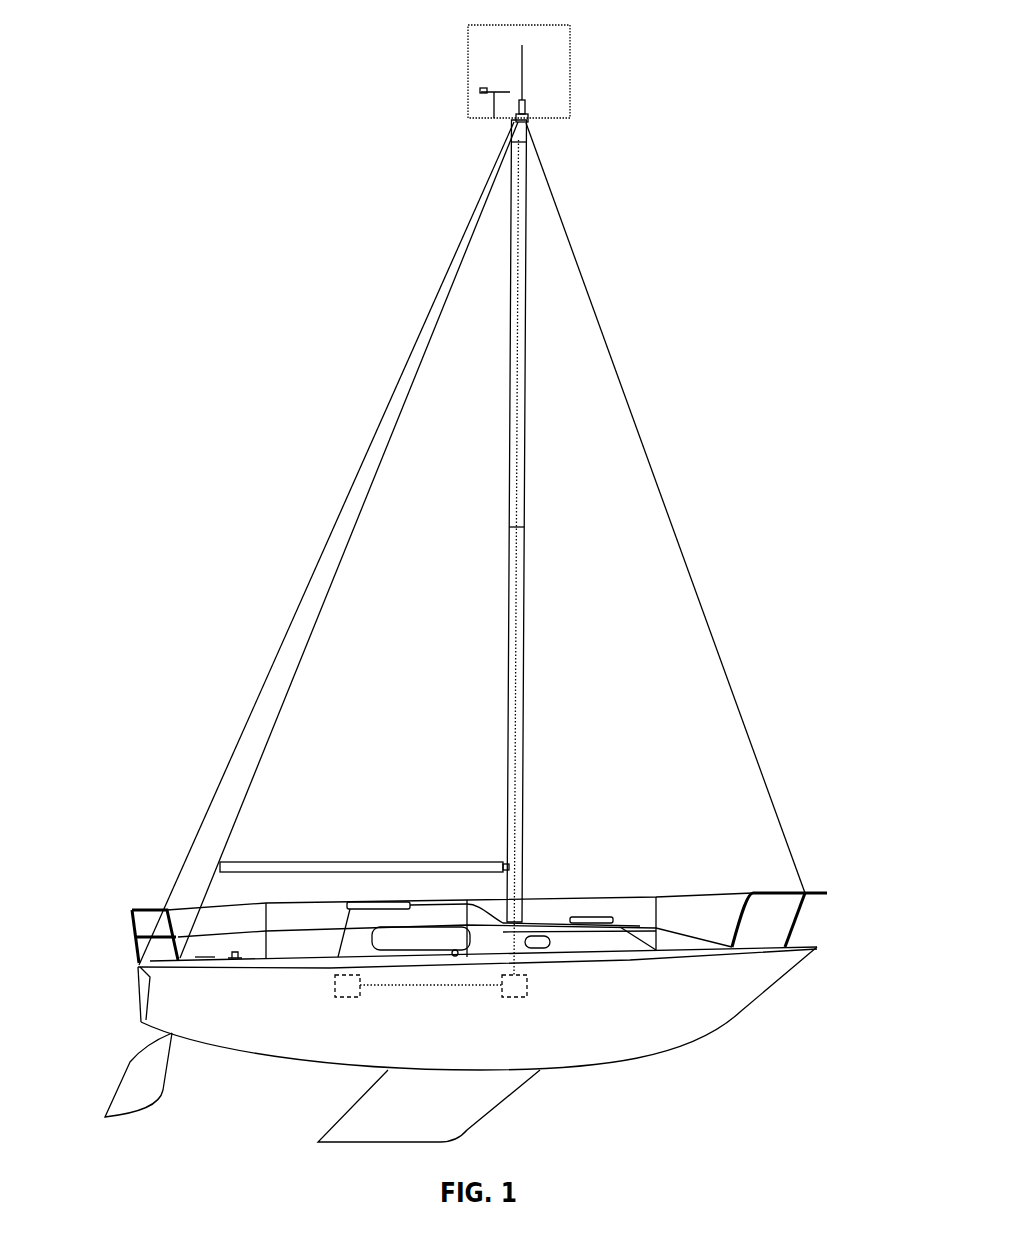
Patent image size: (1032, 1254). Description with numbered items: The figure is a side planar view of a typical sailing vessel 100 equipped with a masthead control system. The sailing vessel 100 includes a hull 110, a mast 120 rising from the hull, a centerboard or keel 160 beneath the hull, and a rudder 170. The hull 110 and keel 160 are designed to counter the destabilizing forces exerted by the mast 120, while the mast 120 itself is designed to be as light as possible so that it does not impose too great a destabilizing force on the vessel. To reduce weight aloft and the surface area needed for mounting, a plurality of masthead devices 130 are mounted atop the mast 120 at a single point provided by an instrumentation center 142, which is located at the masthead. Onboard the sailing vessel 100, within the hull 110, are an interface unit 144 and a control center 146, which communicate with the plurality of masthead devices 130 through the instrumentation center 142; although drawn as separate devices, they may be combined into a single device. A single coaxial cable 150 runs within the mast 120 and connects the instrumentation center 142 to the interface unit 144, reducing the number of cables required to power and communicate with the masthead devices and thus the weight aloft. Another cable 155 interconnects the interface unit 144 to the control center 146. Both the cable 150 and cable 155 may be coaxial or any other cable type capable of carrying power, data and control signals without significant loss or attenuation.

The sailing vessel 100 is at (288, 370).
The hull 110 is at (724, 1027).
The mast 120 is at (525, 457).
The plurality of masthead devices 130 is at (557, 70).
The instrumentation center 142 is at (528, 124).
The interface unit 144 is at (513, 997).
The control center 146 is at (348, 996).
The coaxial cable 150 is at (515, 430).
The cable 155 is at (440, 988).
The keel 160 is at (346, 1127).
The rudder 170 is at (128, 1095).